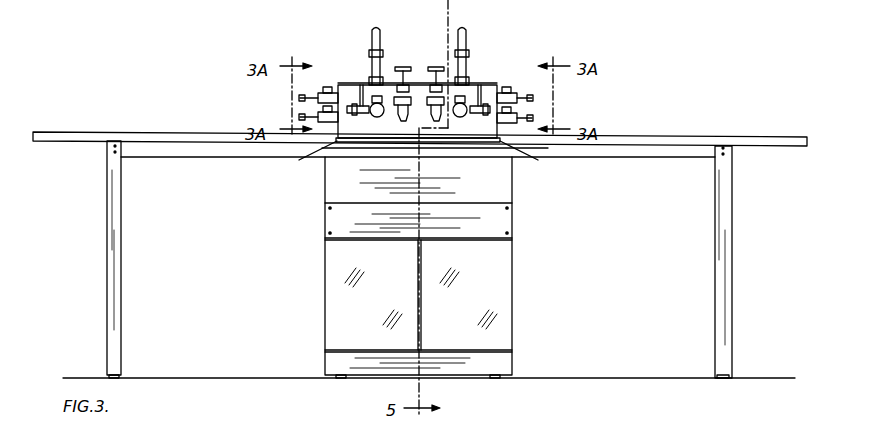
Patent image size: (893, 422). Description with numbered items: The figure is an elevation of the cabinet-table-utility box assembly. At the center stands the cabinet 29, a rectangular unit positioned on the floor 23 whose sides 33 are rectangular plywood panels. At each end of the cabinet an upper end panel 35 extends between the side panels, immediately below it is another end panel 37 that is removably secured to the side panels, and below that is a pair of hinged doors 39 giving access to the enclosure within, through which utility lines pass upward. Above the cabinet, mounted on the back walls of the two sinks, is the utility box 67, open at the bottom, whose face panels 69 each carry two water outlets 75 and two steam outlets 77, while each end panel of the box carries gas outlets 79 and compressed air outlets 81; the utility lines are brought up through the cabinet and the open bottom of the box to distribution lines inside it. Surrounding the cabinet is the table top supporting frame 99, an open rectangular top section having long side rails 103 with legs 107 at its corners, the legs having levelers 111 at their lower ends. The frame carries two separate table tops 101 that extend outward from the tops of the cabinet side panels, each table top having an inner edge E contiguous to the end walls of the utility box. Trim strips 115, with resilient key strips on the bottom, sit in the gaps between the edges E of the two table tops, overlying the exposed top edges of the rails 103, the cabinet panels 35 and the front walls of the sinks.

The floor 23 is at (755, 378).
The cabinet 29 is at (318, 368).
The side panels 33 is at (518, 262).
The upper end panel 35 is at (500, 193).
The end panel 37 is at (495, 224).
The hinged doors 39 is at (378, 304).
The utility box 67 is at (493, 78).
The face panels 69 is at (385, 150).
The water outlets 75 is at (371, 43).
The steam outlets 77 is at (438, 68).
The gas outlets 79 is at (324, 94).
The compressed air outlets 81 is at (317, 98).
The table top supporting frame 99 is at (102, 199).
The table tops 101 is at (82, 132).
The side rails 103 is at (193, 152).
The legs 107 is at (112, 270).
The levelers 111 is at (115, 373).
The trim strips 115 is at (423, 148).
The inner edge of the table top E is at (316, 150).